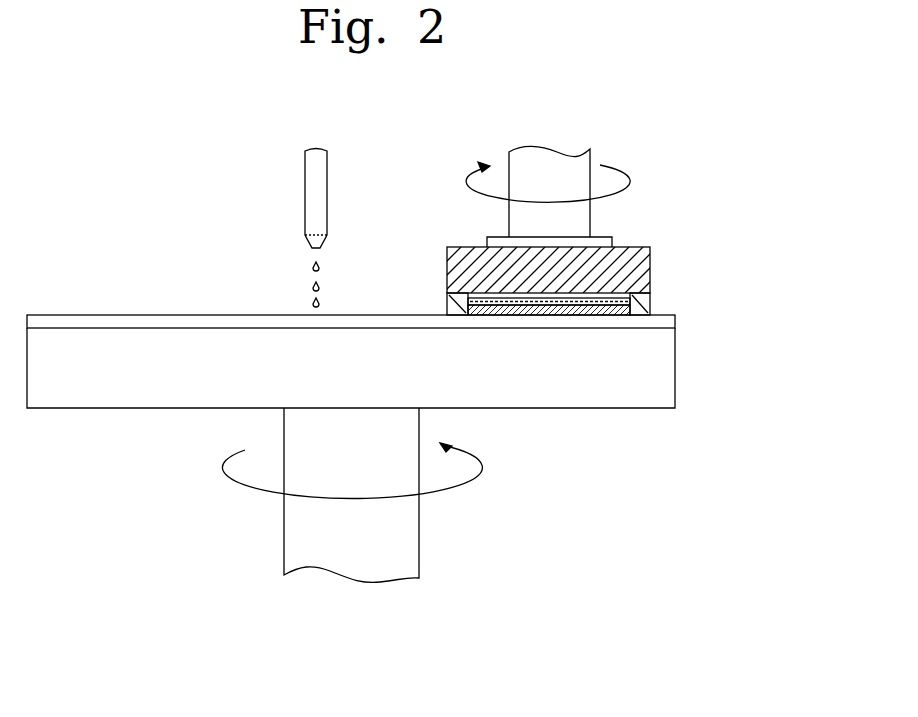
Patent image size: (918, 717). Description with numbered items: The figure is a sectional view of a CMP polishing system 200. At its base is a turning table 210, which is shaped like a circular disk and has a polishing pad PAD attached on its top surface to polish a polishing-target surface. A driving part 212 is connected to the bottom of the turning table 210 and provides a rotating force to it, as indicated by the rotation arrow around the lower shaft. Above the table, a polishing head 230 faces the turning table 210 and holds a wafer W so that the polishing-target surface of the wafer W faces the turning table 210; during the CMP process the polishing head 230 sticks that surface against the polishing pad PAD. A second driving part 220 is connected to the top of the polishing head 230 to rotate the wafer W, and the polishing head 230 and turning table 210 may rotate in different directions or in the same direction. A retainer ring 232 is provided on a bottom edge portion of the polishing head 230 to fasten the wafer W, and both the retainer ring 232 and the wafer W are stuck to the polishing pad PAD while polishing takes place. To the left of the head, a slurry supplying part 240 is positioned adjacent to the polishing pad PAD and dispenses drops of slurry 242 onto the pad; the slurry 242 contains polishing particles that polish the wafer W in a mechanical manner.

The polishing head assembly 200 is at (679, 169).
The turning table 210 is at (665, 372).
The driving part 212 is at (410, 532).
The driving part 220 is at (580, 217).
The polishing head 230 is at (652, 270).
The retainer ring 232 is at (652, 300).
The slurry supplying part 240 is at (318, 191).
The slurry 242 is at (322, 285).
The polishing pad PAD is at (663, 321).
The wafer W is at (585, 311).